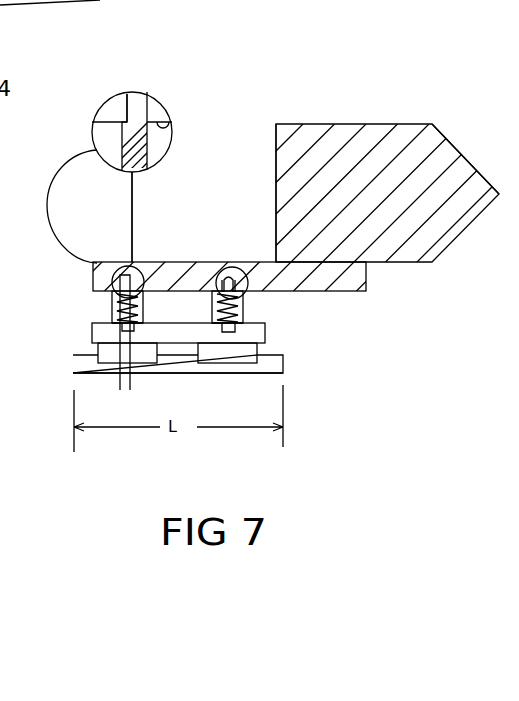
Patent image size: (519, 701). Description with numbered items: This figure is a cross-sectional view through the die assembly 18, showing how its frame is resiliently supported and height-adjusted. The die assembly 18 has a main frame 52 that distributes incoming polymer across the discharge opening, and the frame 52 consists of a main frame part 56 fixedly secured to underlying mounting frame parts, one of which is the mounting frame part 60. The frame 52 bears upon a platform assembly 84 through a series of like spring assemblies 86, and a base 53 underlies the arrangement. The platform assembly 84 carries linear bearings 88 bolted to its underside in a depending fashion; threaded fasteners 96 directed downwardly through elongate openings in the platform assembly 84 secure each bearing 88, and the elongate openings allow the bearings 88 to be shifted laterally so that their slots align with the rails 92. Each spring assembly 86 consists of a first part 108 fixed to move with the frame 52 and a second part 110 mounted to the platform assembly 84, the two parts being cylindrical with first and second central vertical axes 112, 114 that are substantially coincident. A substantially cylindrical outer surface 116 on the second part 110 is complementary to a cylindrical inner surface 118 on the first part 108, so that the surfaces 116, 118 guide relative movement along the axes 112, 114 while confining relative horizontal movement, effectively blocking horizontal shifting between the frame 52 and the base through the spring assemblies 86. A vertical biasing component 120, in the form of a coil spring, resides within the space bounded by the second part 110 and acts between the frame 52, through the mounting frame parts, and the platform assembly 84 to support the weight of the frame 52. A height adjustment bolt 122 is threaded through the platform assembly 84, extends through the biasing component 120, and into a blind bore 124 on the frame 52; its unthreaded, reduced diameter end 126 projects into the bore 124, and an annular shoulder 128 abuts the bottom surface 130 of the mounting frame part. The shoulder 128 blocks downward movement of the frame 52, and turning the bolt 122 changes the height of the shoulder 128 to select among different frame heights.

The die assembly 18 is at (399, 123).
The main frame 52 is at (0, 137).
The base 53 is at (302, 355).
The main frame part 56 is at (450, 140).
The mounting frame part 60 is at (310, 289).
The platform assembly 84 is at (264, 331).
The spring assembly 86 is at (97, 313).
The linear bearing 88 is at (115, 355).
The rail 92 is at (283, 365).
The threaded fastener 96 is at (53, 208).
The first part 108 is at (240, 283).
The second part 110 is at (110, 323).
The first central vertical axis 112 is at (134, 203).
The second central vertical axis 114 is at (167, 217).
The cylindrical outer surface 116 is at (213, 323).
The cylindrical inner surface 118 is at (212, 280).
The vertical biasing component 120 is at (118, 378).
The height adjustment bolt 122 is at (150, 120).
The blind bore 124 is at (132, 93).
The reduced diameter end 126 is at (120, 115).
The annular shoulder 128 is at (122, 118).
The bottom surface 130 is at (171, 130).